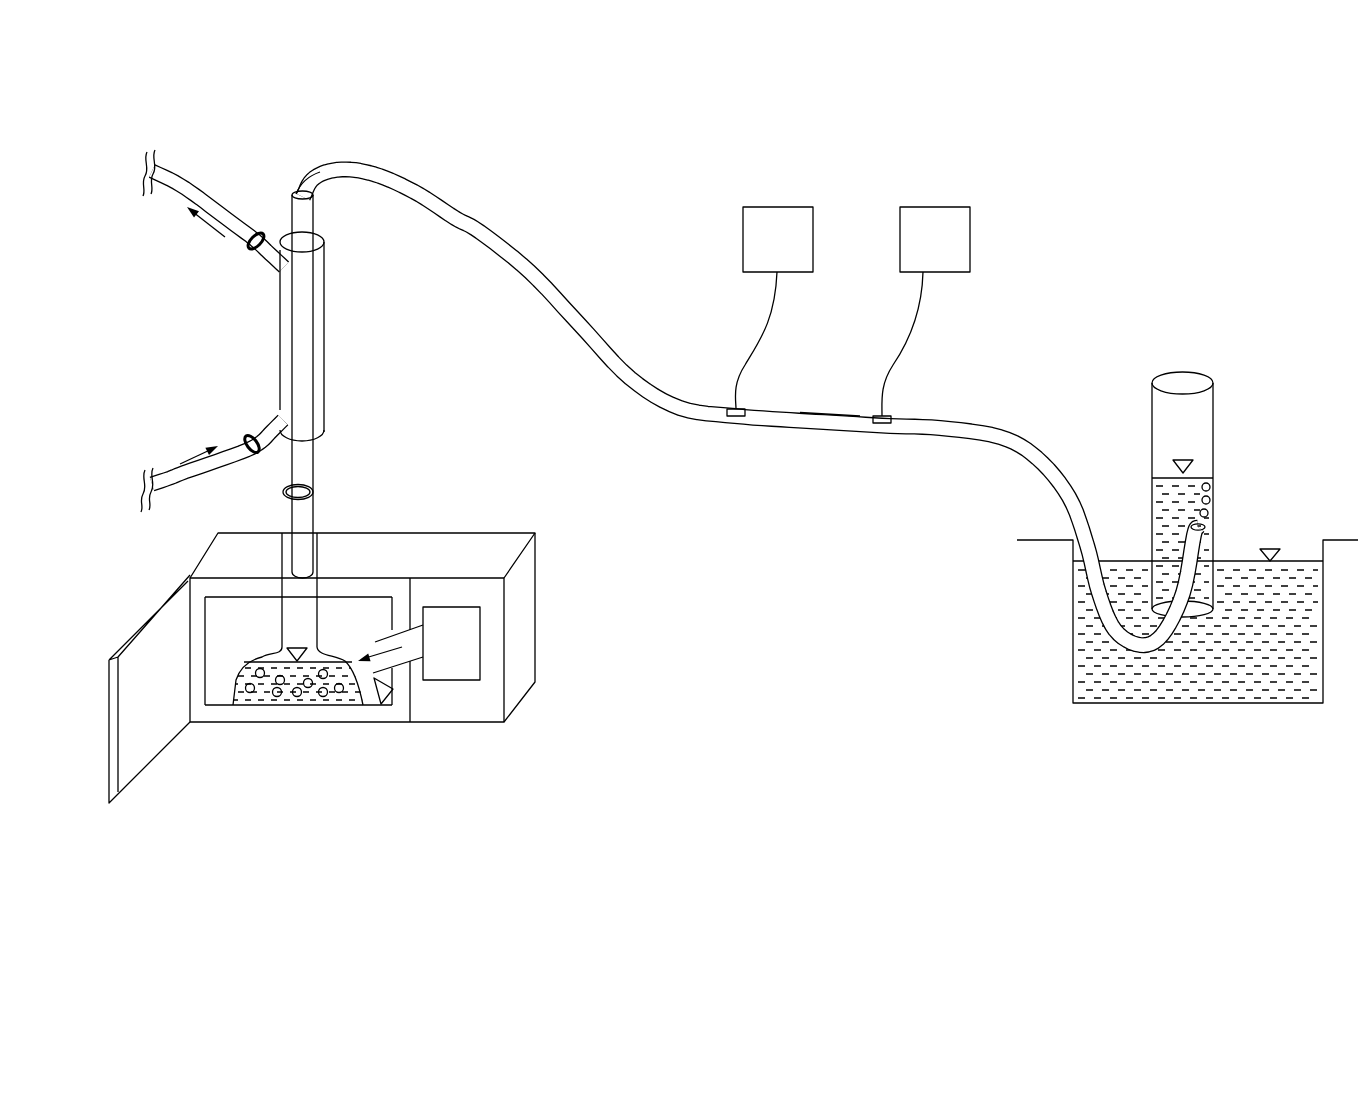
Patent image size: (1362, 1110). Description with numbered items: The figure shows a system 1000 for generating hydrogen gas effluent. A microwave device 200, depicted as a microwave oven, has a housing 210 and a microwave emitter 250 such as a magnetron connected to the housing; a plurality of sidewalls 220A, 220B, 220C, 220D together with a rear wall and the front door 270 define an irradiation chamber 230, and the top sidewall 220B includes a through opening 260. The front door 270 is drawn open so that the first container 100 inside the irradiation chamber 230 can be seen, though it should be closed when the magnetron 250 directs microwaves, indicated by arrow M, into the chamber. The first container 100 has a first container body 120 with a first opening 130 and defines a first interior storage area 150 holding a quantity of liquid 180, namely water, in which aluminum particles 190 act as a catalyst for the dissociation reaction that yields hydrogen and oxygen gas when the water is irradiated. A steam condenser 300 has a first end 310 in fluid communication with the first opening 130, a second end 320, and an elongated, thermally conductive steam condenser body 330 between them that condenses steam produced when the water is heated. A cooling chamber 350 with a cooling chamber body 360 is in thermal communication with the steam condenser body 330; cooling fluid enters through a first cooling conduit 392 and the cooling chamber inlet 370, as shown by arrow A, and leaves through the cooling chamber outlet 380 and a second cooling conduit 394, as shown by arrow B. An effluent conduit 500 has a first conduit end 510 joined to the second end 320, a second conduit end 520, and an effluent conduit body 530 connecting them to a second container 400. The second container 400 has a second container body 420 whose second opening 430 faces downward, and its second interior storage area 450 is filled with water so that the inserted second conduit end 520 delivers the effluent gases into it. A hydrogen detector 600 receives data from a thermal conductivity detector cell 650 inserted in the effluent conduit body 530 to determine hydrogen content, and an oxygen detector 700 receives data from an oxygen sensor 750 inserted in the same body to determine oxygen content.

The system 1000 is at (1181, 111).
The first container 100 is at (284, 715).
The first container body 120 is at (235, 687).
The first opening 130 is at (318, 489).
The first interior storage area 150 is at (378, 684).
The liquid 180 is at (274, 657).
The aluminum particles 190 is at (324, 697).
The microwave device 200 is at (351, 679).
The housing 210 is at (364, 707).
The sidewall 220A is at (392, 698).
The sidewall 220B is at (370, 603).
The sidewall 220C is at (218, 597).
The sidewall 220D is at (213, 700).
The irradiation chamber 230 is at (346, 611).
The microwave emitter 250 is at (455, 680).
The through opening 260 is at (286, 585).
The front door 270 is at (107, 790).
The steam condenser 300 is at (272, 347).
The first end 310 is at (296, 483).
The second end 320 is at (314, 213).
The steam condenser body 330 is at (320, 380).
The cooling chamber 350 is at (197, 314).
The cooling chamber body 360 is at (280, 372).
The cooling chamber inlet 370 is at (243, 435).
The cooling chamber outlet 380 is at (248, 248).
The first cooling conduit 392 is at (162, 470).
The second cooling conduit 394 is at (182, 163).
The second container 400 is at (1187, 573).
The second container body 420 is at (1214, 405).
The second opening 430 is at (1208, 610).
The second interior storage area 450 is at (1183, 427).
The effluent conduit 500 is at (794, 368).
The first conduit end 510 is at (296, 191).
The second conduit end 520 is at (1206, 528).
The effluent conduit body 530 is at (828, 430).
The hydrogen detector 600 is at (773, 207).
The thermal conductivity detector cell 650 is at (743, 422).
The oxygen detector 700 is at (940, 207).
The oxygen sensor 750 is at (895, 418).